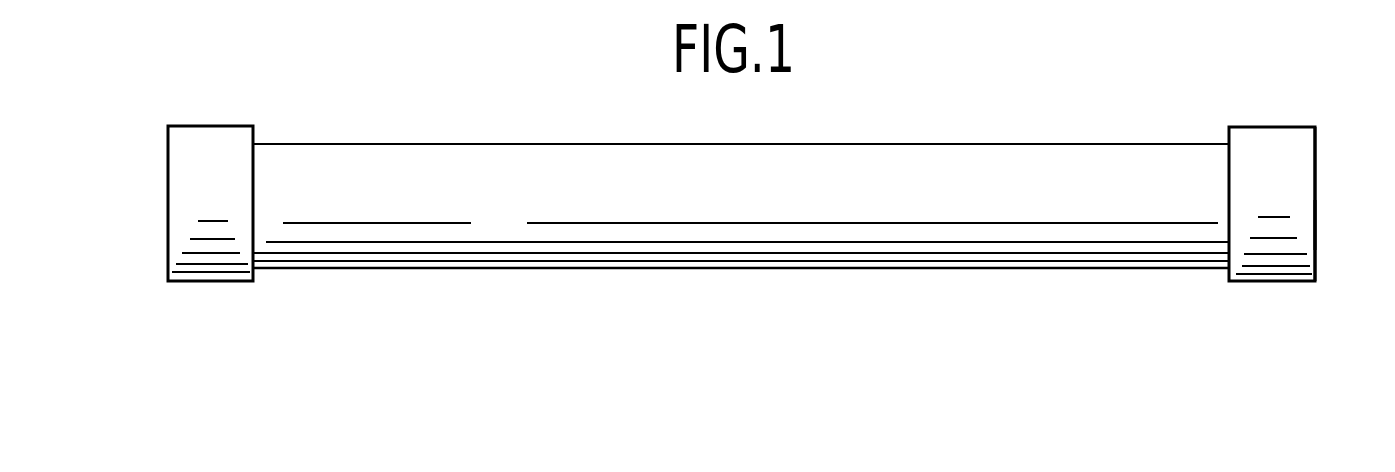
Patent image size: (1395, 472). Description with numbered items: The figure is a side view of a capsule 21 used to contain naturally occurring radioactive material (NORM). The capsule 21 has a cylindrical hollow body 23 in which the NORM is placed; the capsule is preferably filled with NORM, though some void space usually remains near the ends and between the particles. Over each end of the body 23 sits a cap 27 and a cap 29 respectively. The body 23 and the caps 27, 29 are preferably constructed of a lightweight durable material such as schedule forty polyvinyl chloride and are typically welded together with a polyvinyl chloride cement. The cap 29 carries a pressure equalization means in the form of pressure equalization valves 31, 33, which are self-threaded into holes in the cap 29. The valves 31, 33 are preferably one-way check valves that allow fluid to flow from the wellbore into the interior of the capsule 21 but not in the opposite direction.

The capsule 21 is at (549, 135).
The cylindrical hollow body 23 is at (425, 268).
The cap 27 is at (205, 268).
The cap 29 is at (1278, 258).
The pressure equalization valve 31 is at (1318, 177).
The pressure equalization valve 33 is at (1317, 222).